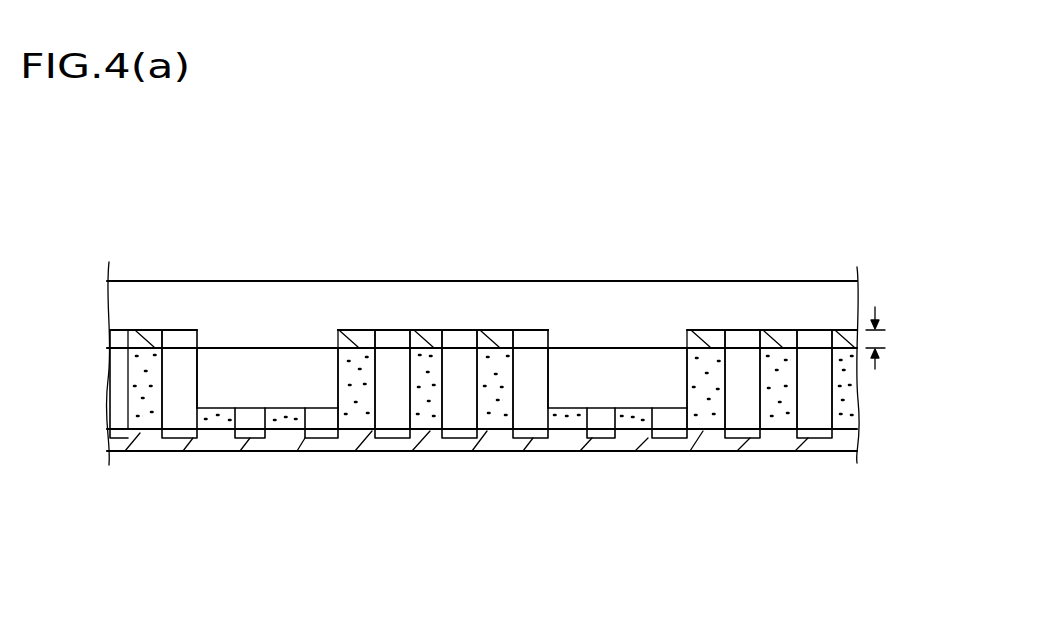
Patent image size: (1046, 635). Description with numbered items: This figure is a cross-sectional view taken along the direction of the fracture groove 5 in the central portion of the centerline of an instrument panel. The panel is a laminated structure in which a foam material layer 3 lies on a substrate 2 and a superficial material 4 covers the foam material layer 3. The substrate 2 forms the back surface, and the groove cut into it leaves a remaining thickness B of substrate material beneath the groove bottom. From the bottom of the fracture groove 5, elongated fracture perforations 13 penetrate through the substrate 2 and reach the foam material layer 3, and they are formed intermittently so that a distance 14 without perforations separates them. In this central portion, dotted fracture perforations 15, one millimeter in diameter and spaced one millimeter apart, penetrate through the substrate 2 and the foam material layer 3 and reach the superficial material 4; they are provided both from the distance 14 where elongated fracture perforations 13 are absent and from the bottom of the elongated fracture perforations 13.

The substrate 2 is at (130, 340).
The foam material layer 3 is at (130, 393).
The superficial material 4 is at (120, 443).
The fracture groove 5 is at (783, 300).
The elongated fracture perforations 13 is at (292, 373).
The distance between the elongated fracture perforations 14 is at (358, 330).
The dotted fracture perforations 15 is at (165, 415).
The remaining thickness B is at (885, 343).